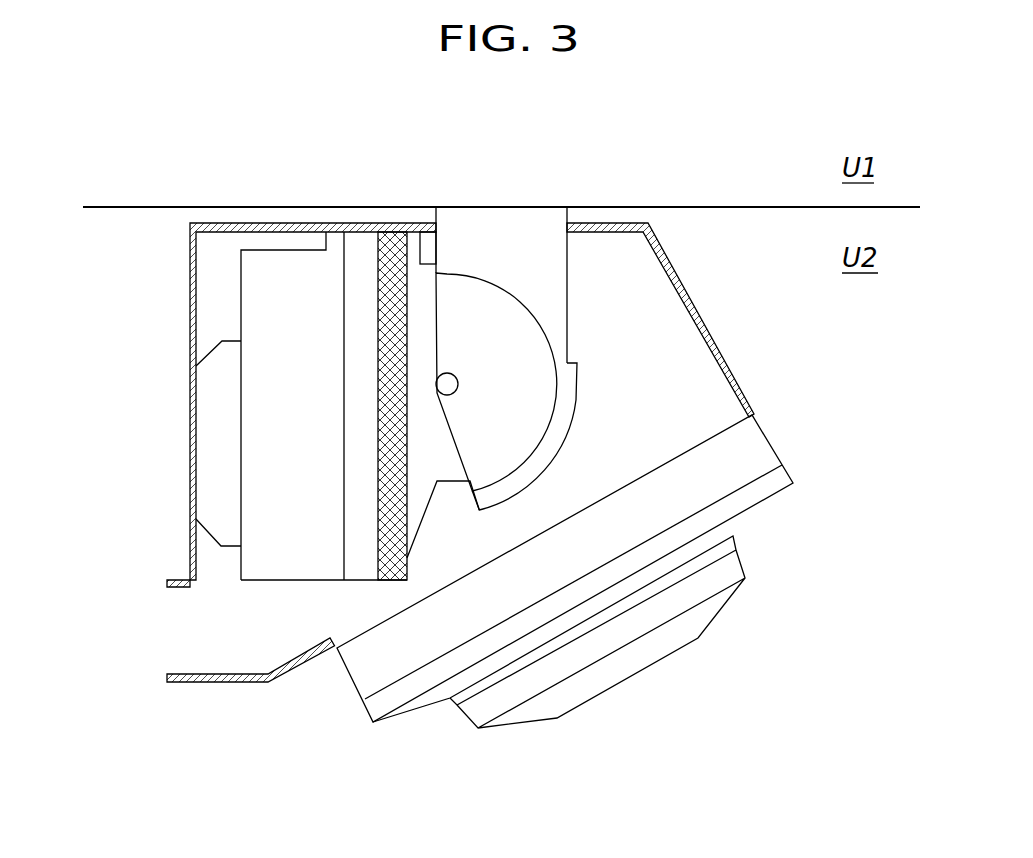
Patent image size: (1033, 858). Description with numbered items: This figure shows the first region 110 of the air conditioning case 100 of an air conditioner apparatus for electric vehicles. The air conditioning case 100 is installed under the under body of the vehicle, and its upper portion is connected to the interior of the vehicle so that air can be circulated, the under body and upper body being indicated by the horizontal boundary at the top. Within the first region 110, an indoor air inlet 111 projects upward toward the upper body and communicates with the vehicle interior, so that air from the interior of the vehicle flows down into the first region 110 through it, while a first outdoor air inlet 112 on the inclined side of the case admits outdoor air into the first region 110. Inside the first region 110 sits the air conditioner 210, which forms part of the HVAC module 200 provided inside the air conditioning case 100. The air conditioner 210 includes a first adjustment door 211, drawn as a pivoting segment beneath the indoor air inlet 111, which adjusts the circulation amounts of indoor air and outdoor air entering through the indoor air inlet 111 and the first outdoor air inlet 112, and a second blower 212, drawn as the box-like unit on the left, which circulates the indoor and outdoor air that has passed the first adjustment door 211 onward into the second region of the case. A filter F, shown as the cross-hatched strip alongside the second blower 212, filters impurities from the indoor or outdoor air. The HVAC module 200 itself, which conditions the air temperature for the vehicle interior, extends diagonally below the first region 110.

The air conditioning case 100 is at (626, 212).
The first region 110 is at (235, 227).
The indoor air inlet 111 is at (493, 212).
The first outdoor air inlet 112 is at (580, 410).
The HVAC module 200 is at (650, 623).
The air conditioner 210 is at (223, 408).
The first adjustment door 211 is at (540, 320).
The second blower 212 is at (255, 482).
The filter F is at (390, 580).